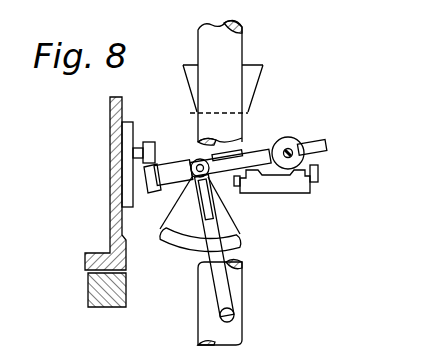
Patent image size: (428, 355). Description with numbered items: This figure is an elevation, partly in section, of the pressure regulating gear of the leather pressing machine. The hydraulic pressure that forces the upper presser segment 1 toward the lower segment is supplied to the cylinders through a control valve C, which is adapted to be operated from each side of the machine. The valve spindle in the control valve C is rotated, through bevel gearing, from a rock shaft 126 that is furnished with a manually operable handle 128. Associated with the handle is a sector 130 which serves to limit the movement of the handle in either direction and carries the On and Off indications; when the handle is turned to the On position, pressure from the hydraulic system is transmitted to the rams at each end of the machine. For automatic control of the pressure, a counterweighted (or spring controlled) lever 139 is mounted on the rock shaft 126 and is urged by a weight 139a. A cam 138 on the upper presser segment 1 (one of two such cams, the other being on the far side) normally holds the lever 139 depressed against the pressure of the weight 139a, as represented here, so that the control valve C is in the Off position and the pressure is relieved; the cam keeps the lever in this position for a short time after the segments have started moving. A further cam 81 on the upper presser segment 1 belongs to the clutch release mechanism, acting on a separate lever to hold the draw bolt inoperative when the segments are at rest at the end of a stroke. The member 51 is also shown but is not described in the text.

The upper presser segment 1 is at (123, 107).
The cam 81 is at (122, 190).
The cam 138 is at (150, 142).
The counterweighted lever 139 is at (165, 180).
The rock shaft 126 is at (197, 162).
The weight 139a is at (294, 142).
The control valve C is at (291, 193).
The manually operable handle 128 is at (207, 208).
The sector 130 is at (245, 244).
The shaft 51 is at (234, 333).